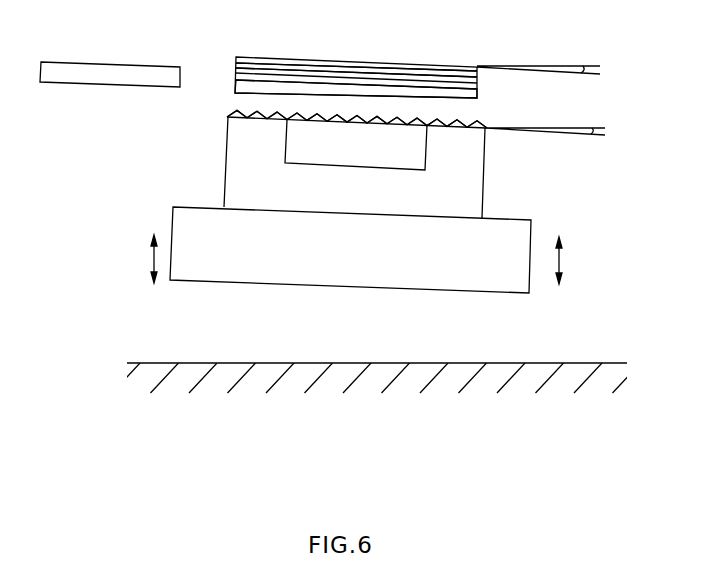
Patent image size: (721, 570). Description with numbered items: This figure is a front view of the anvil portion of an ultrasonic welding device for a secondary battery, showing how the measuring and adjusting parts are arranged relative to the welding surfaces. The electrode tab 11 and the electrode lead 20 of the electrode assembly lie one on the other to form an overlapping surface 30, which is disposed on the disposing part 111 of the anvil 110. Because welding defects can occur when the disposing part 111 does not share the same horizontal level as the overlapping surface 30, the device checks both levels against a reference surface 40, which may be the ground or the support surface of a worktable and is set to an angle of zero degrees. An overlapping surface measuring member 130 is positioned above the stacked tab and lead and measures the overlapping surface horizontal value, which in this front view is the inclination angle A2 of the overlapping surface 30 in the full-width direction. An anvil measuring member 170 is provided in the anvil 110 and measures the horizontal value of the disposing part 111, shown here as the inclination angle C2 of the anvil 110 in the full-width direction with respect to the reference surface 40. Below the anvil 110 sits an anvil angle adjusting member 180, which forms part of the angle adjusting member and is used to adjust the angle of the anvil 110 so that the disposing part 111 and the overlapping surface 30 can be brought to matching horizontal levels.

The overlapping surface measuring member 130 is at (110, 73).
The overlapping surface 30 is at (230, 60).
The electrode tab 11 is at (451, 73).
The electrode lead 20 is at (476, 94).
The inclination angle of the overlapping surface in the full-width direction A2 is at (583, 66).
The anvil 110 is at (478, 177).
The disposing part 111 is at (252, 112).
The inclination angle of the anvil in the full-width direction C2 is at (592, 128).
The anvil measuring member 170 is at (353, 150).
The anvil angle adjusting member 180 is at (532, 228).
The reference surface 40 is at (578, 367).